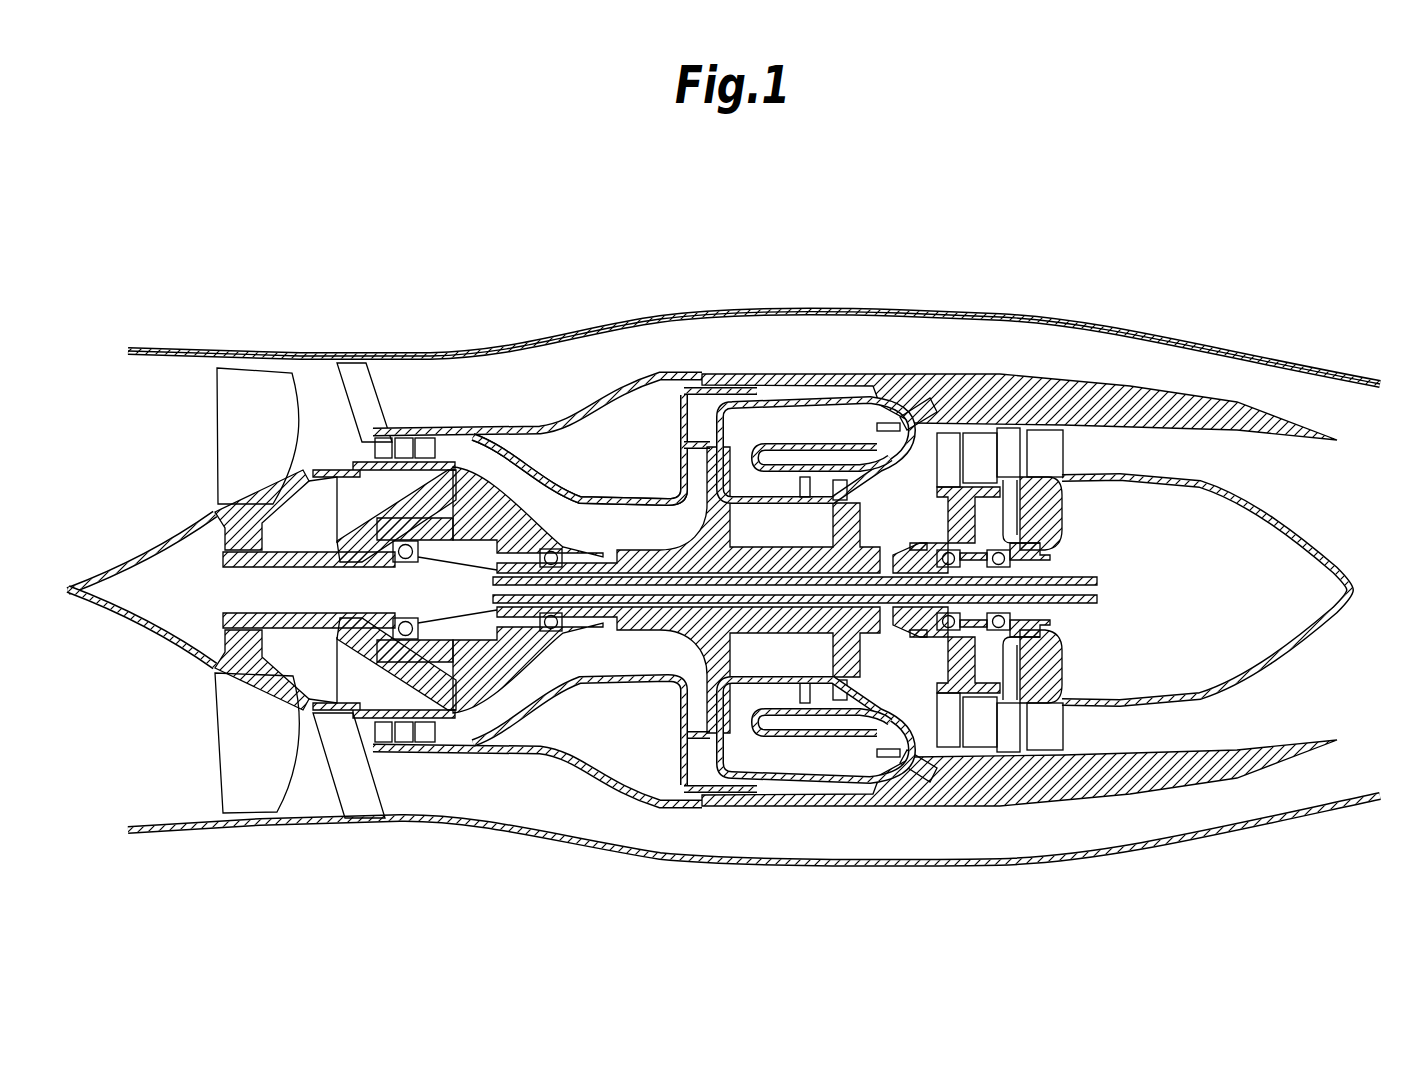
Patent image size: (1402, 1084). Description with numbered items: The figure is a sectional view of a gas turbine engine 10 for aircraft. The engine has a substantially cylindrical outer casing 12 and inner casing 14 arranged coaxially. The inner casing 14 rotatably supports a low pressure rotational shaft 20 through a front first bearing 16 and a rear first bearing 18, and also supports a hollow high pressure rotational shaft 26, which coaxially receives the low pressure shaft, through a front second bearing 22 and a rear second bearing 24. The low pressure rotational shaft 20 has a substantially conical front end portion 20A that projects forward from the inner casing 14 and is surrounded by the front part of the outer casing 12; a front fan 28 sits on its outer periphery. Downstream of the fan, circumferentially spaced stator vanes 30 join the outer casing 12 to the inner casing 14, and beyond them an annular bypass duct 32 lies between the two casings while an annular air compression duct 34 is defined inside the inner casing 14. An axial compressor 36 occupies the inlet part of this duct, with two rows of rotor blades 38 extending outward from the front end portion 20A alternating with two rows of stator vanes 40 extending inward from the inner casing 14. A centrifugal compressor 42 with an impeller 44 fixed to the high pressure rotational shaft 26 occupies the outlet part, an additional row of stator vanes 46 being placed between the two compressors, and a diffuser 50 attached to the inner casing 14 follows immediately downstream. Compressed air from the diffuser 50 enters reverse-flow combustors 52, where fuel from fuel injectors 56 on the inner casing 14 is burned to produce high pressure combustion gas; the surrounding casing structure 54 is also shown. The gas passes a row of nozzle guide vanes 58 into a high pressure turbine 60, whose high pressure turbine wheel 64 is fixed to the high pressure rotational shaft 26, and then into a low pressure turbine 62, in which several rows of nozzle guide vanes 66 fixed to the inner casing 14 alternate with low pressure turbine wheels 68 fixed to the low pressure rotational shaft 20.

The gas turbine engine 10 is at (1074, 251).
The outer casing 12 is at (736, 316).
The inner casing 14 is at (597, 402).
The front first bearing 16 is at (420, 551).
The rear first bearing 18 is at (1018, 538).
The low pressure rotational shaft 20 is at (298, 560).
The front end portion 20A is at (140, 547).
The front second bearing 22 is at (565, 546).
The rear second bearing 24 is at (930, 545).
The high pressure rotational shaft 26 is at (888, 565).
The front fan 28 is at (228, 411).
The stator vanes 30 is at (357, 390).
The bypass duct 32 is at (951, 345).
The air compression duct 34 is at (500, 460).
The axial compressor 36 is at (418, 438).
The rotor blades 38 is at (375, 427).
The stator vanes 40 is at (396, 438).
The centrifugal compressor 42 is at (616, 655).
The impeller 44 is at (650, 660).
The stator vanes 46 is at (545, 500).
The diffuser 50 is at (705, 390).
The reverse-flow combustors 52 is at (803, 420).
The combustor casing 54 is at (853, 372).
The fuel injectors 56 is at (900, 424).
The nozzle guide vanes 58 is at (806, 490).
The high pressure turbine 60 is at (840, 666).
The high pressure turbine wheel 64 is at (857, 670).
The low pressure turbine 62 is at (1064, 727).
The nozzle guide vanes 66 is at (948, 740).
The low pressure turbine wheels 68 is at (977, 745).